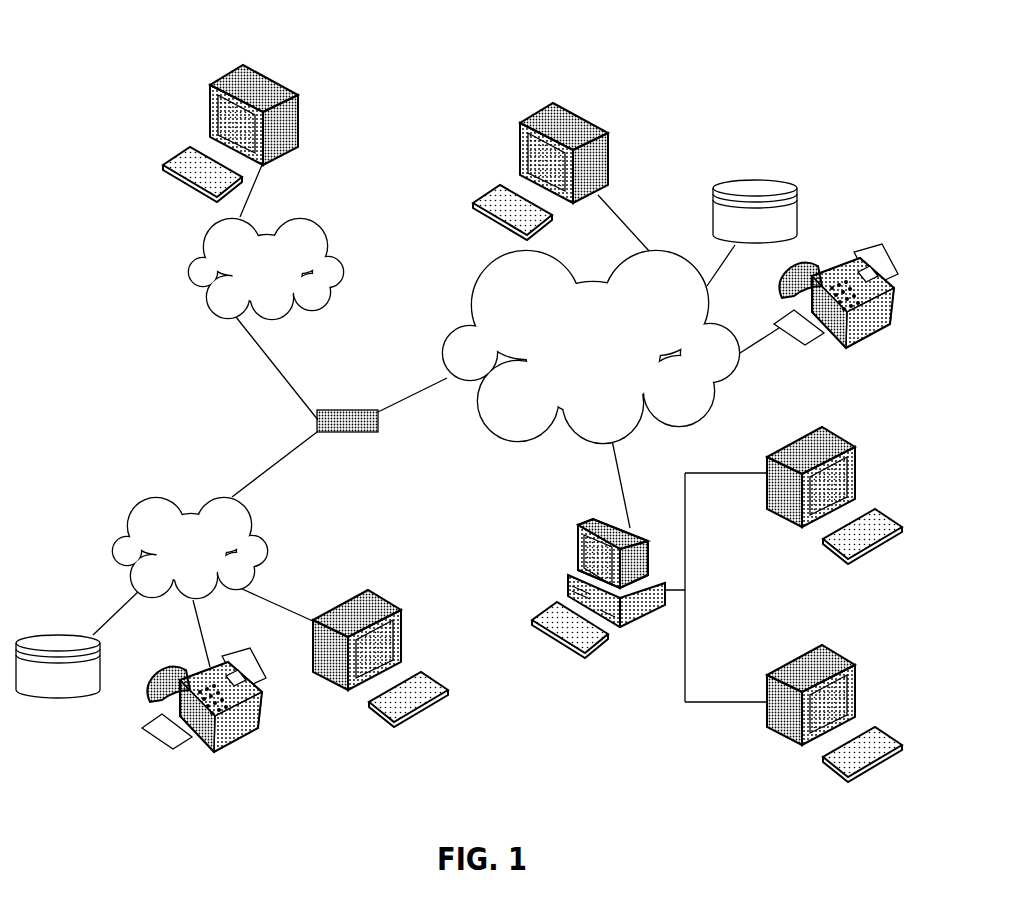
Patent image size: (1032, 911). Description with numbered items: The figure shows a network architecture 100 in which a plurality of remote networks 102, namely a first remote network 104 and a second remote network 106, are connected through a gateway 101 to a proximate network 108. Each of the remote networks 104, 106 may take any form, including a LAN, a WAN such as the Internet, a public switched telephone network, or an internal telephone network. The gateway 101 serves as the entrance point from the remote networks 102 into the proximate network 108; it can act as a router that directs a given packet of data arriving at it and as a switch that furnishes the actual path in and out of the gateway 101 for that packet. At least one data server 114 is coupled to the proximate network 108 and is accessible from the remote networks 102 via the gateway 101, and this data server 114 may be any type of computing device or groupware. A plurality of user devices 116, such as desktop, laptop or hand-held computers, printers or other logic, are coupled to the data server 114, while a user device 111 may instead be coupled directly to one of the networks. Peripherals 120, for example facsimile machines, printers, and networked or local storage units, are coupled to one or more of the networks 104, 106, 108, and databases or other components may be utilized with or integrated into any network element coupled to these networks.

The architecture 100 is at (139, 44).
The gateway 101 is at (330, 407).
The remote networks 102 is at (169, 331).
The first remote network 104 is at (118, 522).
The second remote network 106 is at (340, 238).
The proximate network 108 is at (700, 412).
The user device 111 is at (608, 140).
The data server 114 is at (578, 542).
The user devices 116 is at (299, 105).
The peripheral 120 is at (798, 190).